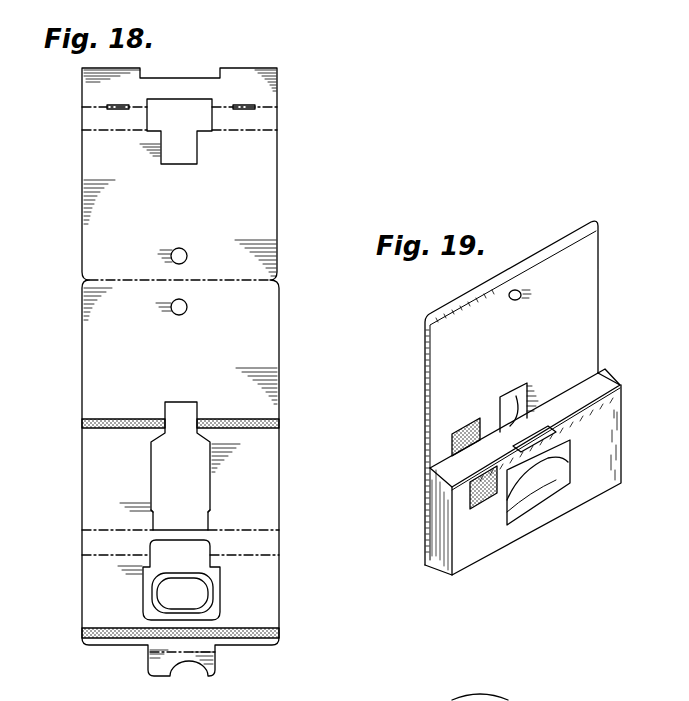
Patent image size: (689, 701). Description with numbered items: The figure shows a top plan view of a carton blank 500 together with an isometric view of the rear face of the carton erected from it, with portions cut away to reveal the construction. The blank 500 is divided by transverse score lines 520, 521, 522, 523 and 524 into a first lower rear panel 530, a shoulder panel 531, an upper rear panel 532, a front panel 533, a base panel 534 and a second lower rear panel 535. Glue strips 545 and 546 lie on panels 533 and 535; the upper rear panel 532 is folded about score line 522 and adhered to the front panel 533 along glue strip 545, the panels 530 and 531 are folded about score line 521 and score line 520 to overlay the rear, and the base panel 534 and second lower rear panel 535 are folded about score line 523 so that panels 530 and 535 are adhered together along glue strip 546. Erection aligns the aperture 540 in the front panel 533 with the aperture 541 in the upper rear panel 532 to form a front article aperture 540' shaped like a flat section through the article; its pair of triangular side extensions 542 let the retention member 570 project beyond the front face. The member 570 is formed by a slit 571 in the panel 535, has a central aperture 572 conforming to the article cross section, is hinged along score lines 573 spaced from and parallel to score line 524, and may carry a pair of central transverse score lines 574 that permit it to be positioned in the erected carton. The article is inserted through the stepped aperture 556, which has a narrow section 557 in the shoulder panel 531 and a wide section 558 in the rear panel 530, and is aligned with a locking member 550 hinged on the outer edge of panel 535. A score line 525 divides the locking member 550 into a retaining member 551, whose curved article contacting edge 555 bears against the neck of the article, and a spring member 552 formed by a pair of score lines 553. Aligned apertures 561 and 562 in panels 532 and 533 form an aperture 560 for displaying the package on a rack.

In FIG. 18, the blank 500 is at (285, 338).
In FIG. 18, the transverse score line 520 is at (270, 107).
In FIG. 19, the transverse score line 520 is at (612, 382).
In FIG. 18, the transverse score line 521 is at (270, 130).
In FIG. 19, the transverse score line 521 is at (598, 372).
In FIG. 18, the transverse score line 522 is at (258, 280).
In FIG. 19, the transverse score line 522 is at (572, 228).
In FIG. 18, the transverse score line 523 is at (232, 530).
In FIG. 19, the transverse score line 523 is at (428, 565).
In FIG. 18, the transverse score line 524 is at (262, 555).
In FIG. 19, the transverse score line 524 is at (534, 532).
In FIG. 18, the score line 525 is at (210, 676).
In FIG. 18, the first lower rear panel 530 is at (180, 87).
In FIG. 19, the first lower rear panel 530 is at (622, 387).
In FIG. 18, the shoulder panel 531 is at (244, 118).
In FIG. 19, the shoulder panel 531 is at (525, 430).
In FIG. 18, the upper rear panel 532 is at (179, 205).
In FIG. 19, the upper rear panel 532 is at (511, 393).
In FIG. 18, the front panel 533 is at (180, 405).
In FIG. 19, the front panel 533 is at (438, 485).
In FIG. 18, the base panel 534 is at (180, 542).
In FIG. 19, the base panel 534 is at (446, 573).
In FIG. 18, the second lower rear panel 535 is at (180, 600).
In FIG. 19, the second lower rear panel 535 is at (536, 480).
In FIG. 18, the aperture 540 is at (175, 466).
In FIG. 19, the front article aperture 540' is at (531, 393).
In FIG. 18, the aperture 541 is at (198, 156).
In FIG. 18, the triangular side extensions 542 is at (148, 508).
In FIG. 19, the triangular side extensions 542 is at (507, 500).
In FIG. 18, the glue strip 545 is at (280, 425).
In FIG. 19, the glue strip 545 is at (436, 447).
In FIG. 18, the glue strip 546 is at (272, 636).
In FIG. 19, the glue strip 546 is at (492, 481).
In FIG. 18, the locking member 550 is at (223, 671).
In FIG. 18, the retaining member 551 is at (160, 674).
In FIG. 19, the spring member 552 is at (556, 432).
In FIG. 18, the score lines 553 is at (140, 645).
In FIG. 18, the article contacting edge 555 is at (183, 671).
In FIG. 19, the article contacting edge 555 is at (514, 400).
In FIG. 18, the stepped aperture 556 is at (148, 118).
In FIG. 18, the narrow section 557 is at (210, 118).
In FIG. 18, the wide section 558 is at (163, 99).
In FIG. 19, the aperture 560 is at (514, 289).
In FIG. 18, the aperture 561 is at (180, 247).
In FIG. 18, the aperture 562 is at (188, 307).
In FIG. 18, the retention member 570 is at (143, 580).
In FIG. 19, the retention member 570 is at (565, 474).
In FIG. 18, the slit 571 is at (221, 586).
In FIG. 18, the central aperture 572 is at (207, 600).
In FIG. 18, the score lines 573 is at (210, 552).
In FIG. 19, the score lines 573 is at (556, 492).
In FIG. 18, the central transverse score lines 574 is at (145, 607).
In FIG. 19, the central transverse score lines 574 is at (566, 454).